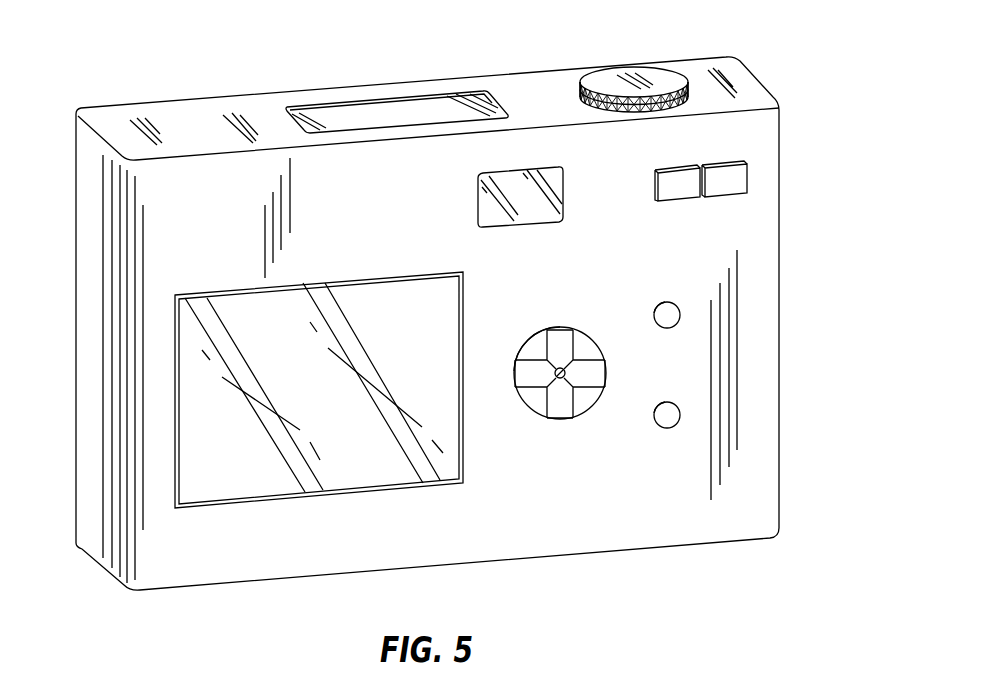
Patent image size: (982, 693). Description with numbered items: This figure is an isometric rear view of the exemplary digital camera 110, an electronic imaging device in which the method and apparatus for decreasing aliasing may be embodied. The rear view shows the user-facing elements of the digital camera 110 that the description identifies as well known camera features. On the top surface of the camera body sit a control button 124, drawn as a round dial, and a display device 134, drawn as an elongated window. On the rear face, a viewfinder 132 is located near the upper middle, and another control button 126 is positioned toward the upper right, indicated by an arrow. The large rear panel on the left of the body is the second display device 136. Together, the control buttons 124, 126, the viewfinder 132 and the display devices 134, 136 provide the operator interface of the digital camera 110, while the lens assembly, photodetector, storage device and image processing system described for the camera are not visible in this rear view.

The digital camera 110 is at (207, 60).
The control button 124 is at (617, 68).
The control button 126 is at (733, 157).
The viewfinder 132 is at (533, 226).
The display device 134 is at (378, 97).
The display device 136 is at (378, 273).